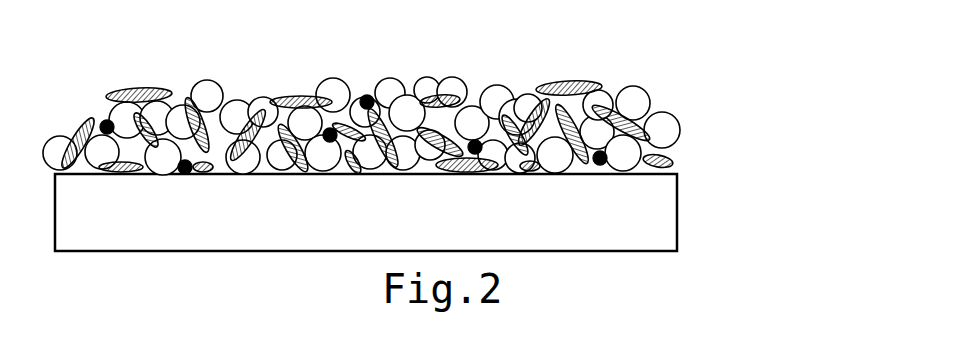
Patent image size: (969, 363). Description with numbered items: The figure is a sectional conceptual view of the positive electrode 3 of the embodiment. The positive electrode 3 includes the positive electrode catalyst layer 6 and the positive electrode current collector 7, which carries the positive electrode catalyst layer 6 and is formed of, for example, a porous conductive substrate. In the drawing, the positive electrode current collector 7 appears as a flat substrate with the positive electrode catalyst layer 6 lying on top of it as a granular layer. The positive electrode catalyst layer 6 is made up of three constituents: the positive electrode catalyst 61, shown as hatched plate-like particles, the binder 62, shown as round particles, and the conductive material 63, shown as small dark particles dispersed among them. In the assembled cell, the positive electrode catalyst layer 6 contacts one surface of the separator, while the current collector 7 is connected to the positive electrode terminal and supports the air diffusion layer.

The positive electrode 3 is at (67, 50).
The positive electrode catalyst layer 6 is at (441, 113).
The positive electrode catalyst 61 is at (578, 107).
The binder 62 is at (640, 110).
The conductive material 63 is at (607, 157).
The positive electrode current collector 7 is at (653, 222).